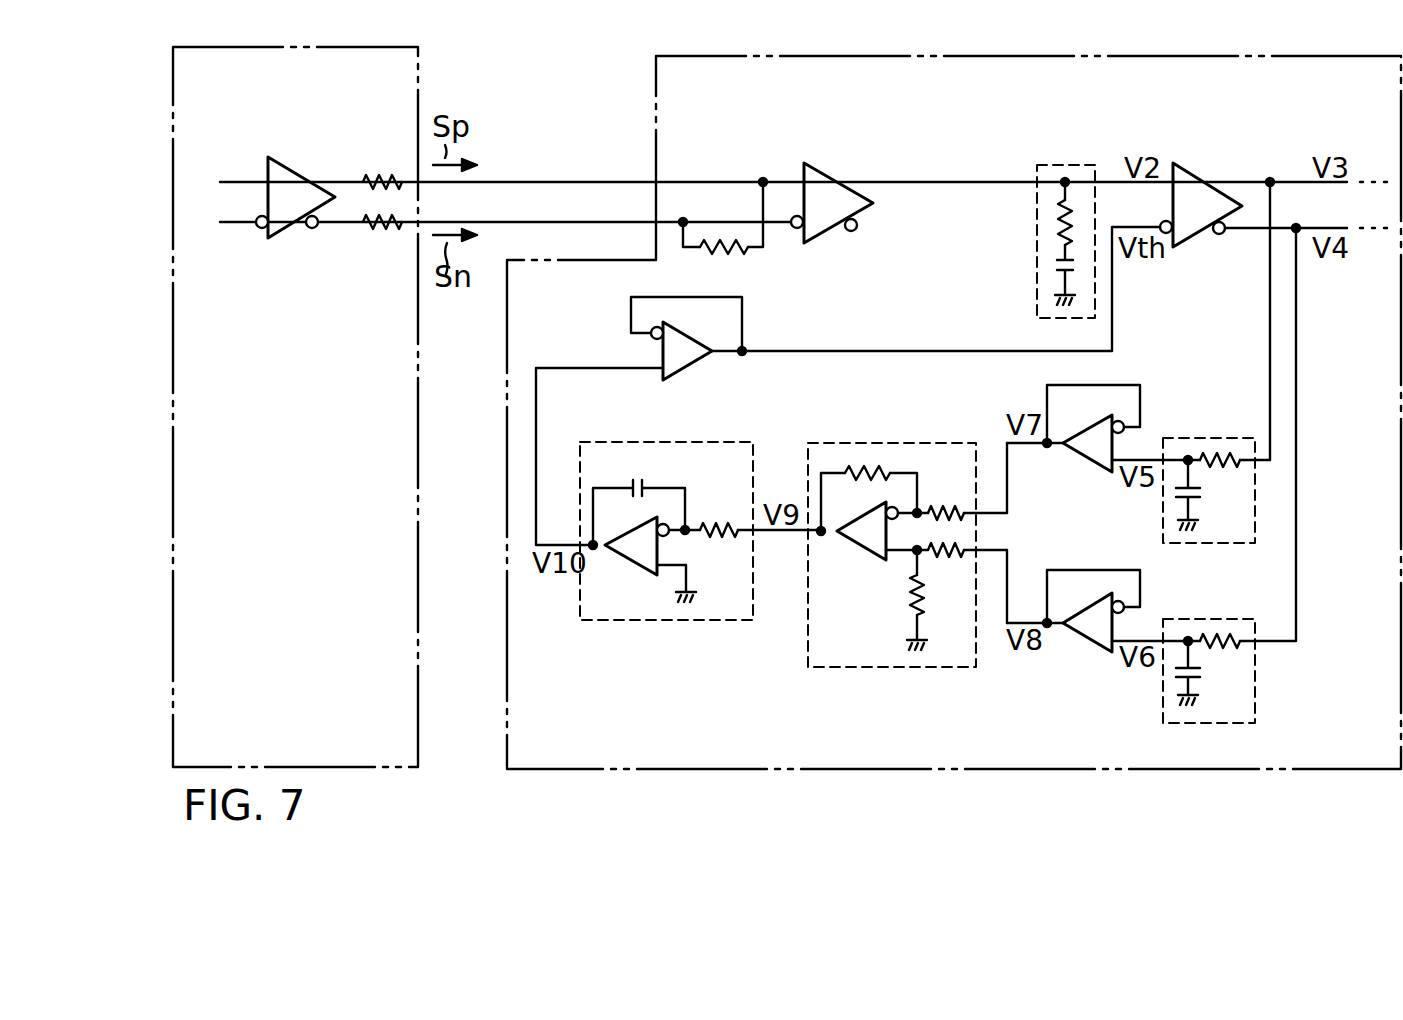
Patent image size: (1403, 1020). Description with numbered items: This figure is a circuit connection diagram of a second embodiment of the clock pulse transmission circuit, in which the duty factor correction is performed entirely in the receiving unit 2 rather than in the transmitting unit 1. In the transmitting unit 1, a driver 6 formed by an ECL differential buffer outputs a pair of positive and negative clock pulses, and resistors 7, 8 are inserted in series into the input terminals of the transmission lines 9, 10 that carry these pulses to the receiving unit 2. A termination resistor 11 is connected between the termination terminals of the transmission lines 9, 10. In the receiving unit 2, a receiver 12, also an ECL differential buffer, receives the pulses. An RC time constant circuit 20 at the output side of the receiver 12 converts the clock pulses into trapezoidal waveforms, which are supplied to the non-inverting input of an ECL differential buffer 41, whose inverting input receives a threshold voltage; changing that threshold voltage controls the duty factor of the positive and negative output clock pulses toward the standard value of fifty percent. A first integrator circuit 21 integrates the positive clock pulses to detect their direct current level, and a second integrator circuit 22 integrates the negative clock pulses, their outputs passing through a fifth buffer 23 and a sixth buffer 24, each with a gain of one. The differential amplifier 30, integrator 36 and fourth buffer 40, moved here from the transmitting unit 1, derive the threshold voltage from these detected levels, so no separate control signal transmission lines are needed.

The transmitting unit 1 is at (213, 46).
The receiving unit 2 is at (737, 52).
The driver 6 is at (289, 157).
The resistor 7 is at (366, 187).
The resistor 8 is at (379, 232).
The transmission line 9 is at (519, 179).
The transmission line 10 is at (591, 220).
The termination resistor 11 is at (733, 254).
The receiver 12 is at (825, 164).
The time constant circuit 20 is at (1056, 165).
The first integrator circuit 21 is at (1185, 437).
The second integrator circuit 22 is at (1255, 668).
The fifth buffer 23 is at (1082, 455).
The sixth buffer 24 is at (1082, 636).
The differential amplifier 30 is at (808, 664).
The integrator 36 is at (605, 622).
The fourth buffer 40 is at (690, 366).
The ECL differential buffer 41 is at (1200, 174).